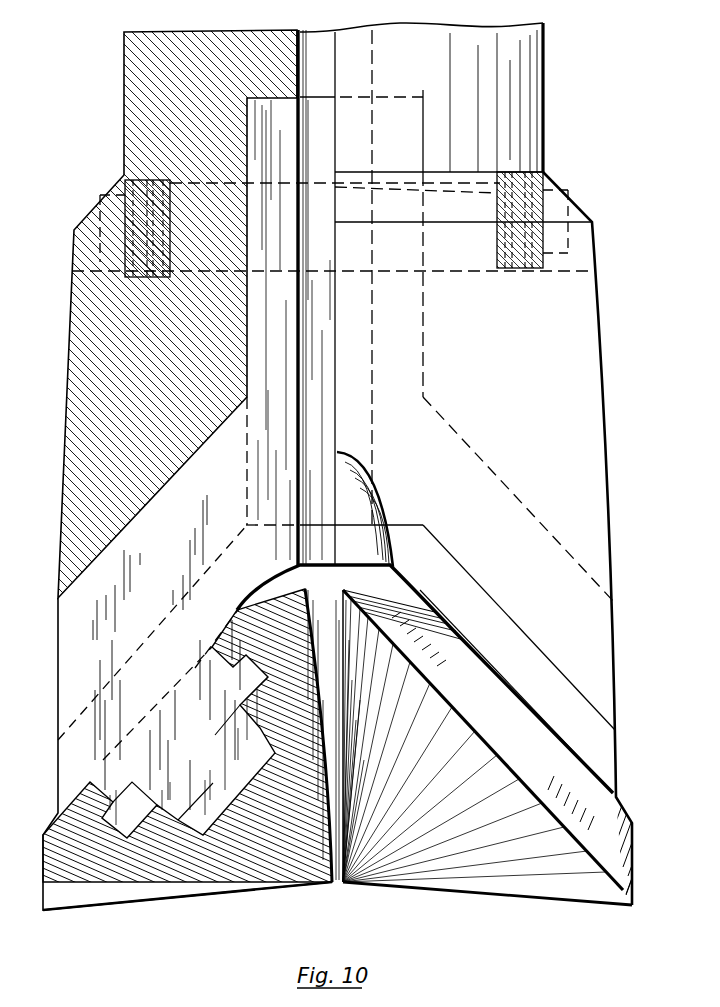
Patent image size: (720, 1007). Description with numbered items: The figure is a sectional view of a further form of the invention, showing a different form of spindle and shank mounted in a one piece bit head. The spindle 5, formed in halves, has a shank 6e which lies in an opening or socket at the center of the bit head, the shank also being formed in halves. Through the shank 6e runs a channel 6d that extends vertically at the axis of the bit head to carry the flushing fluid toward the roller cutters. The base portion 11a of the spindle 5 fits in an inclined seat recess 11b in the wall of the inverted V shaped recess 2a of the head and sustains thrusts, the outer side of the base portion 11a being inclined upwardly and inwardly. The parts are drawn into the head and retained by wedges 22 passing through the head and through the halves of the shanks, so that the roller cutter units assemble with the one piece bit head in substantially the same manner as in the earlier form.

The wedges 22 is at (476, 217).
The shank 6e is at (258, 316).
The channel 6d is at (320, 398).
The inclined seat recess 11b is at (100, 550).
The base portion 11a is at (100, 632).
The spindle 5 is at (157, 770).
The inverted V shaped recess 2a is at (308, 585).